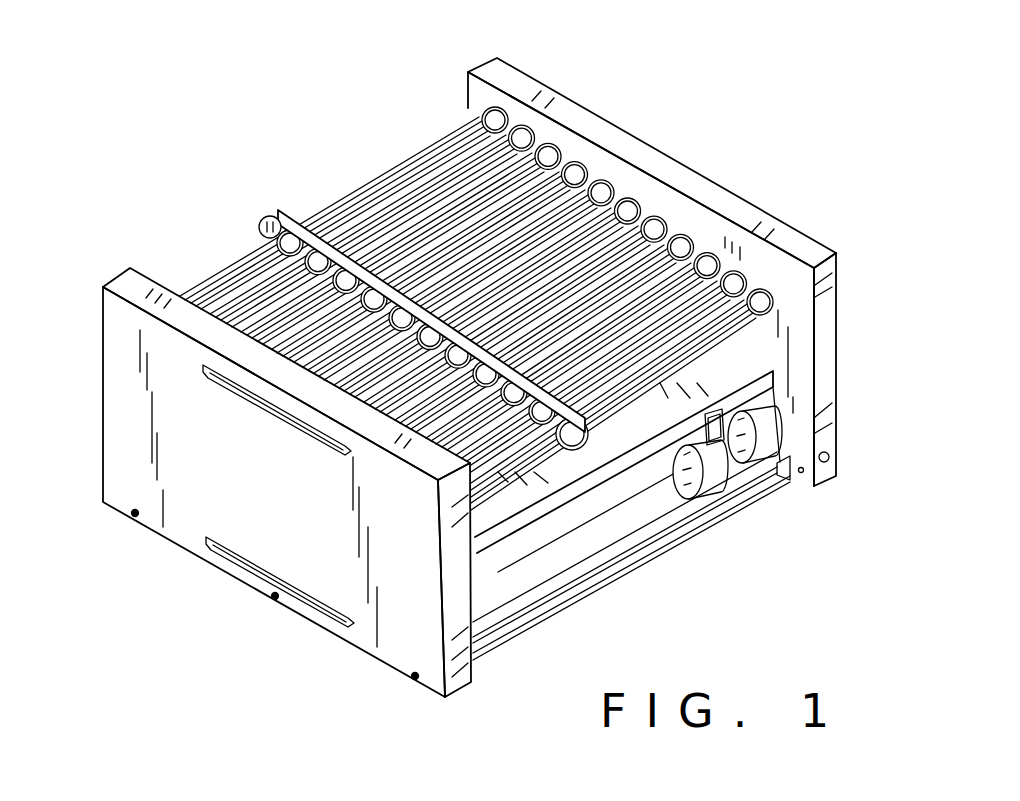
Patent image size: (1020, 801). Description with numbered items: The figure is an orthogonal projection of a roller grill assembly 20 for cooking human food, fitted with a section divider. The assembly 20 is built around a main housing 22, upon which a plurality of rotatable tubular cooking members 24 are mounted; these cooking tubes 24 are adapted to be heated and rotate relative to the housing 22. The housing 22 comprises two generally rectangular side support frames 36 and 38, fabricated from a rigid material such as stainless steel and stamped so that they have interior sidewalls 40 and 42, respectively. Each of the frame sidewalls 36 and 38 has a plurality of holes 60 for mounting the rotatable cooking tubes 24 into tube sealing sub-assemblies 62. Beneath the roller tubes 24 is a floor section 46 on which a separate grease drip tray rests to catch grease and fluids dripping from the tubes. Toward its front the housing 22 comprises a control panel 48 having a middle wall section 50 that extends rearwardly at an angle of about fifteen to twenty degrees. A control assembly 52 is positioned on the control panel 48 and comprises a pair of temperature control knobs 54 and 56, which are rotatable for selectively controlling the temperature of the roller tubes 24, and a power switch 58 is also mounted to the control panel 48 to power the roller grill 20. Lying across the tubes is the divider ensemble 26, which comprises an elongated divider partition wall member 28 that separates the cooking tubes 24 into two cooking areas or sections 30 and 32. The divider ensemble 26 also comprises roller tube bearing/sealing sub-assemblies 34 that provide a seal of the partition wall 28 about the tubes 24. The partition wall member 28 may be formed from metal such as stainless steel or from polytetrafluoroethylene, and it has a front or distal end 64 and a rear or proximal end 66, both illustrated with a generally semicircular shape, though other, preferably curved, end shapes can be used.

The roller grill assembly 20 is at (479, 364).
The main housing 22 is at (479, 385).
The rotatable tubular cooking members 24 is at (432, 168).
The divider ensemble 26 is at (390, 264).
The divider partition wall member 28 is at (303, 222).
The cooking section 30 is at (509, 346).
The cooking section 32 is at (468, 271).
The roller tube bearing/sealing sub-assemblies 34 is at (465, 410).
The side support frame 36 is at (250, 446).
The side support frame 38 is at (652, 265).
The interior sidewall 40 is at (145, 275).
The interior sidewall 42 is at (713, 235).
The floor section 46 is at (735, 372).
The control panel 48 is at (701, 547).
The middle wall section 50 is at (568, 556).
The control assembly 52 is at (799, 491).
The temperature control knob 54 is at (700, 497).
The temperature control knob 56 is at (758, 452).
The power switch 58 is at (718, 462).
The holes 60 is at (677, 158).
The tube sealing sub-assemblies 62 is at (580, 162).
The front or distal end 64 is at (583, 448).
The rear or proximal end 66 is at (258, 226).